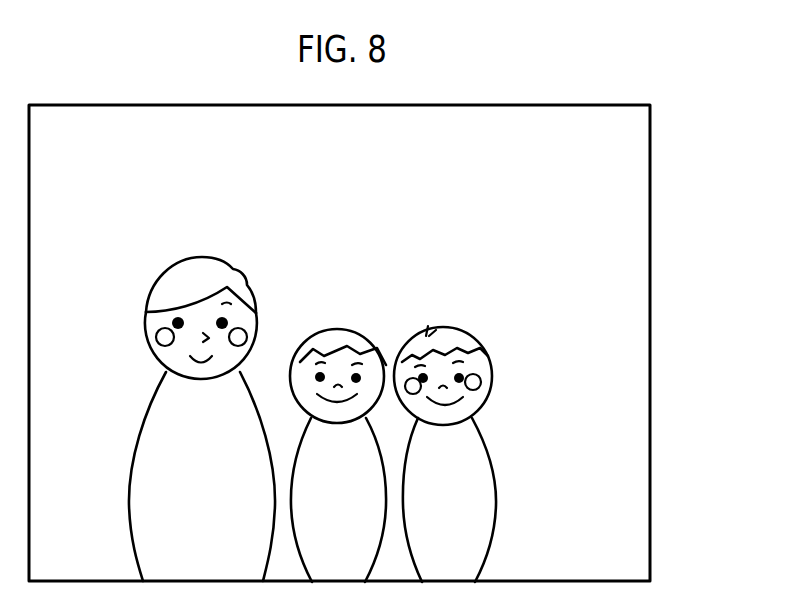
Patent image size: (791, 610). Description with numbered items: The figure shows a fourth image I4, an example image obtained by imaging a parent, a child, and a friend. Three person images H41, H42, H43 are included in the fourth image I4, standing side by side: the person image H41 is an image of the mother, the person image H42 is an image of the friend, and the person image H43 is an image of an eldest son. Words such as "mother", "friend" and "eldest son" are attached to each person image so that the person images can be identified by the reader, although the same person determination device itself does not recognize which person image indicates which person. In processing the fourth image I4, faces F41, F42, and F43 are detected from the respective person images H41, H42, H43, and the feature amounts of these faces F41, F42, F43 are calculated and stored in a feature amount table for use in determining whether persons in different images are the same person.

The fourth image I4 is at (650, 385).
The person image H41 is at (180, 386).
The face F41 is at (149, 290).
The person image H42 is at (347, 411).
The face F42 is at (366, 340).
The person image H43 is at (478, 421).
The face F43 is at (488, 360).